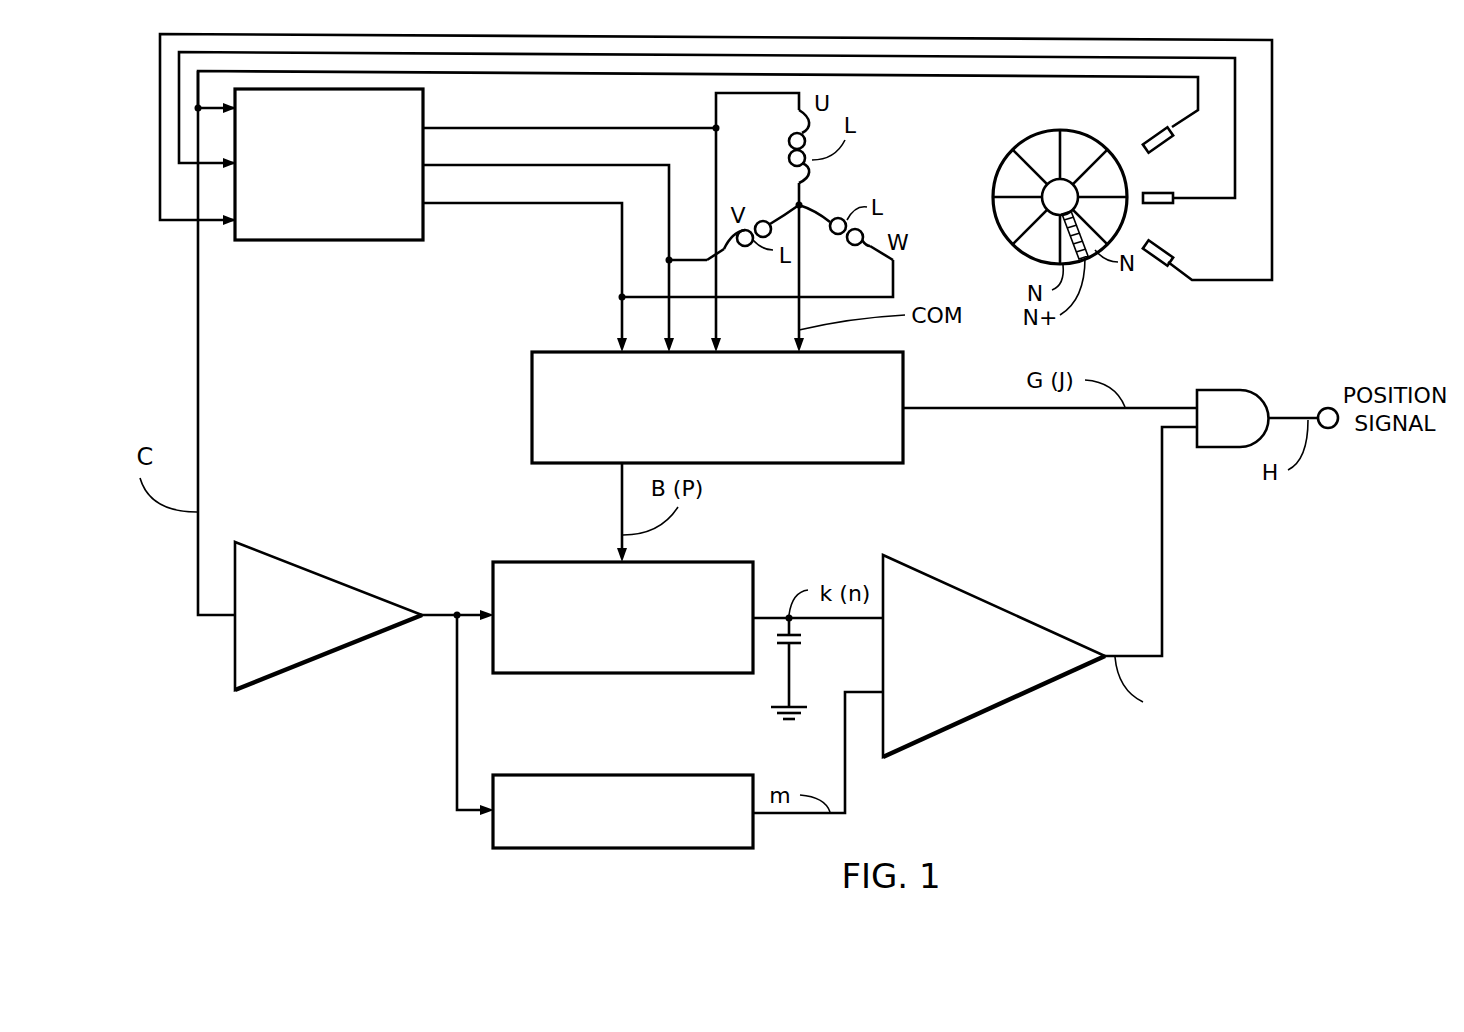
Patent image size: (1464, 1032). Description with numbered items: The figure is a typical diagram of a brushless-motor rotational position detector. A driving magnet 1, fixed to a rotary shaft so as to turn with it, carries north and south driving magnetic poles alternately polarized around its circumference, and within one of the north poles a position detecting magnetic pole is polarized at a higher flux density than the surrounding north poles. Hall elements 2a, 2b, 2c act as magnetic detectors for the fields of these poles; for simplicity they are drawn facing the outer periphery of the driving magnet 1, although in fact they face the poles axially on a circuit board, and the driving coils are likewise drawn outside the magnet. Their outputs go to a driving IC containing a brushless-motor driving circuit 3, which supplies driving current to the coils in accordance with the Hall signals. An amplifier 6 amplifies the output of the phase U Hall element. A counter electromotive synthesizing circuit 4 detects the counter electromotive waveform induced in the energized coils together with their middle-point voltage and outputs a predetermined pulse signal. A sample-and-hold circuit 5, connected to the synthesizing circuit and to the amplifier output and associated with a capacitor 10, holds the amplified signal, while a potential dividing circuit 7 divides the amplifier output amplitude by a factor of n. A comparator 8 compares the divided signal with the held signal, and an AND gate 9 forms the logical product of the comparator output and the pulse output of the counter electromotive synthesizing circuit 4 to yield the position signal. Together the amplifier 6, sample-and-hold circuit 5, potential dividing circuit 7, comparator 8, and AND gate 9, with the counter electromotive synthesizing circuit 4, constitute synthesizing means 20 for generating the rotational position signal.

The driving magnet 1 is at (1069, 113).
The Hall element 2a is at (1165, 145).
The Hall element 2b is at (1158, 205).
The Hall element 2c is at (1150, 265).
The brushless-motor driving circuit 3 is at (345, 240).
The counter electromotive synthesizing circuit 4 is at (593, 352).
The sample-and-hold circuit 5 is at (585, 562).
The amplifier 6 is at (285, 672).
The potential dividing circuit 7 is at (622, 775).
The comparator 8 is at (930, 742).
The AND gate 9 is at (1235, 390).
The capacitor 10 is at (798, 640).
The synthesizing means 20 is at (1075, 727).